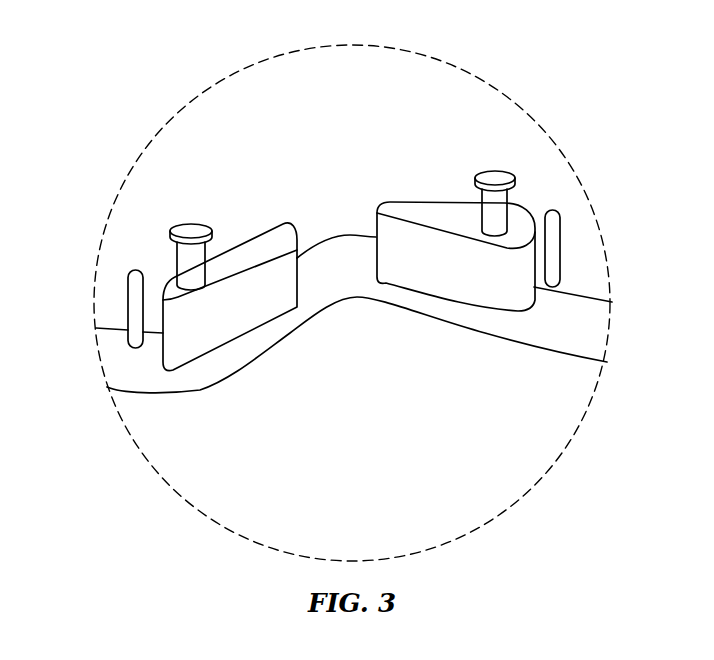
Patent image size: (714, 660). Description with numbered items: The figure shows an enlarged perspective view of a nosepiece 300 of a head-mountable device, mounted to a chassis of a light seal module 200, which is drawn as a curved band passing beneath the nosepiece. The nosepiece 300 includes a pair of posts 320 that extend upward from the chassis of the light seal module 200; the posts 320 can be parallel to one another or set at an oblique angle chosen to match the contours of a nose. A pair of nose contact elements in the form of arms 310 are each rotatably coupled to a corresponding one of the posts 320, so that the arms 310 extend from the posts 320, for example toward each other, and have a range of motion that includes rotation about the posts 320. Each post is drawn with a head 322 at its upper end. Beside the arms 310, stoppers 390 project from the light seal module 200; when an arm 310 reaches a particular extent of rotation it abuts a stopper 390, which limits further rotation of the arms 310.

The light seal module 200 is at (117, 380).
The nosepiece 300 is at (272, 148).
The arms 310 is at (272, 244).
The posts 320 is at (193, 265).
The post head 322 is at (190, 232).
The stoppers 390 is at (128, 305).